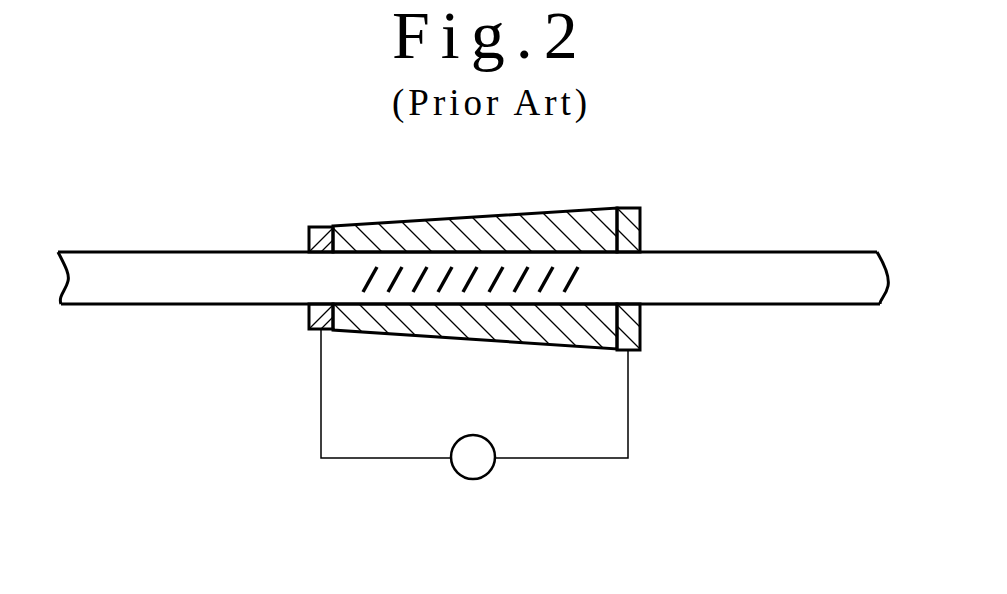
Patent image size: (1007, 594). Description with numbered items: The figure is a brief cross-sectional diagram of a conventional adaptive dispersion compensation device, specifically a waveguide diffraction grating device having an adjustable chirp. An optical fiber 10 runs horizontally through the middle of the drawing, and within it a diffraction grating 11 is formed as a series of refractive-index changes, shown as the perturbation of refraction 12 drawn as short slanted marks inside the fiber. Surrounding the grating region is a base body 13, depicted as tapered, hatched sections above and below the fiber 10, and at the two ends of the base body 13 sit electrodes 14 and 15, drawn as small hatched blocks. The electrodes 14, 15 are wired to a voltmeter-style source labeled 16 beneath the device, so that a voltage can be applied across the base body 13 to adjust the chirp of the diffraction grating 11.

The optical fiber 10 is at (138, 252).
The diffraction grating 11 is at (617, 358).
The perturbation of refraction 12 is at (578, 278).
The base body 13 is at (433, 218).
The electrode 14 is at (308, 310).
The electrode 15 is at (628, 208).
The voltage source 16 is at (483, 473).